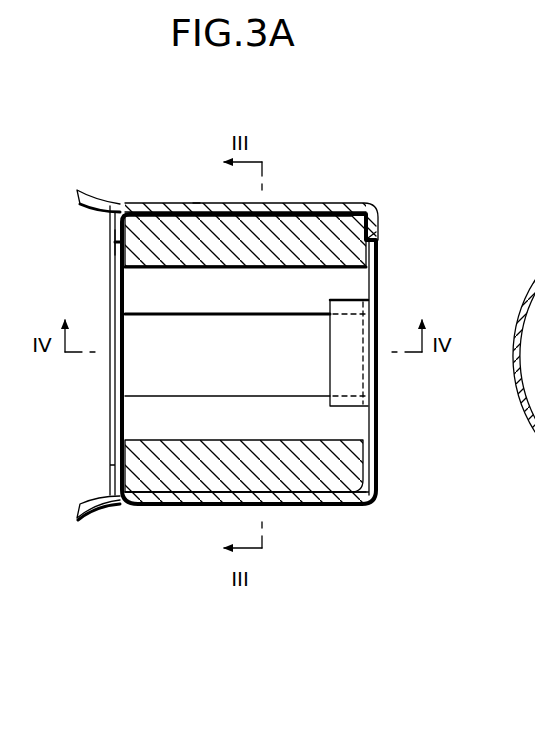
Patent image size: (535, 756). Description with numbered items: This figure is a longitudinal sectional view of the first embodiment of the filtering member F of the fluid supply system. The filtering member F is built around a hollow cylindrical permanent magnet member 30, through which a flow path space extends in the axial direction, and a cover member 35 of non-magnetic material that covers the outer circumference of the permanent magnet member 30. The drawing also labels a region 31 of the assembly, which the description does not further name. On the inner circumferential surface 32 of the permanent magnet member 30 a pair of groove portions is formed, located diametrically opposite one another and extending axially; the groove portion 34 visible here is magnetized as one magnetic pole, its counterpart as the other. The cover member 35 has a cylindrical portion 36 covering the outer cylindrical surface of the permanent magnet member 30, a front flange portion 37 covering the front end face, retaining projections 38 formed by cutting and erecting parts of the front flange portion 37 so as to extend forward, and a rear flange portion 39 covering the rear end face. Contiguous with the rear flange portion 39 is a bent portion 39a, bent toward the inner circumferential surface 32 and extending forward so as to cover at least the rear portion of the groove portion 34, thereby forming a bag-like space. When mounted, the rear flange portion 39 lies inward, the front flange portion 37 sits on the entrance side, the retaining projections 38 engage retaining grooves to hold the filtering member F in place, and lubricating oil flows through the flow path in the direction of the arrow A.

The permanent magnet member 30 is at (230, 262).
The housing 31 is at (320, 203).
The inner circumferential surface 32 is at (345, 440).
The groove portion 34 is at (133, 378).
The cover member 35 is at (194, 200).
The cylindrical portion 36 is at (152, 203).
The front flange portion 37 is at (115, 242).
The retaining projections 38 is at (88, 196).
The rear flange portion 39 is at (378, 230).
The bent portion 39a is at (356, 323).
The arrow A is at (247, 378).
The filtering member F is at (400, 176).